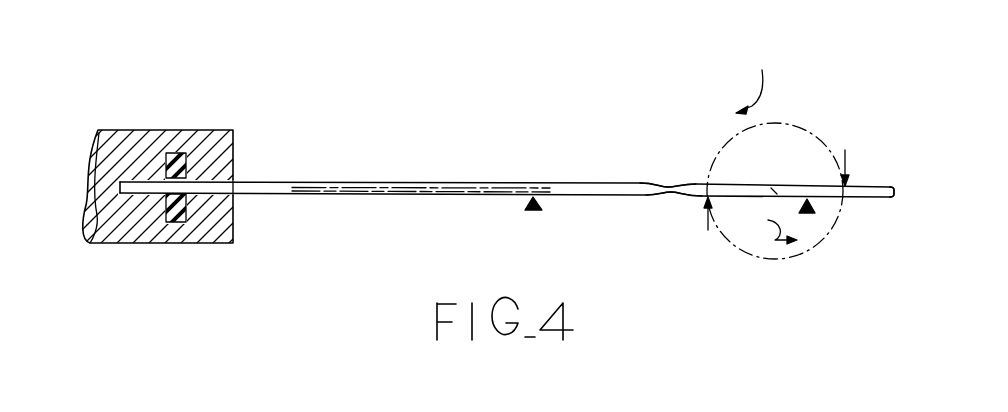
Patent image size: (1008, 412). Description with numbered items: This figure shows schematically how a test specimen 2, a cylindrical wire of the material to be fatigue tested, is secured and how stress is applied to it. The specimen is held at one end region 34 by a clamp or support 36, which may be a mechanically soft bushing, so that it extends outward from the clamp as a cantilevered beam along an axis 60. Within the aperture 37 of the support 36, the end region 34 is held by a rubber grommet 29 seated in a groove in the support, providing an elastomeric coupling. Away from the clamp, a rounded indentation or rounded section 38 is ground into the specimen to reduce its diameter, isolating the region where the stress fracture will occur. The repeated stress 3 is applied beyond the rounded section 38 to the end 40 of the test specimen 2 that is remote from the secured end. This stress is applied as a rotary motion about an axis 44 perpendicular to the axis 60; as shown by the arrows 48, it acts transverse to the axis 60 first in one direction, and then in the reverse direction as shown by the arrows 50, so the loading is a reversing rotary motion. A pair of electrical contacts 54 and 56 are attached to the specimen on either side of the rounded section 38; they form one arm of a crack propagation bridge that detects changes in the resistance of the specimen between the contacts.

The test specimen 2 is at (273, 182).
The repeated stress 3 is at (808, 130).
The rubber grommet 29 is at (182, 153).
The end region 34 is at (153, 181).
The clamp or support 36 is at (180, 245).
The aperture 37 is at (233, 196).
The rounded section 38 is at (667, 196).
The end of test specimen 40 is at (887, 198).
The axis 44 is at (777, 193).
The arrows 48 is at (700, 208).
The arrows 50 is at (763, 143).
The electrical contact 54 is at (524, 201).
The electrical contact 56 is at (813, 208).
The axis 60 is at (433, 187).